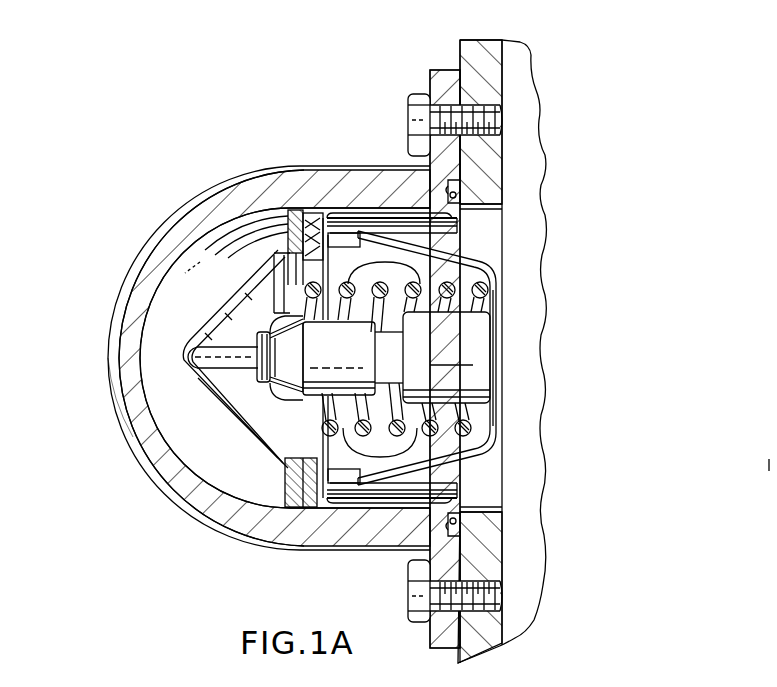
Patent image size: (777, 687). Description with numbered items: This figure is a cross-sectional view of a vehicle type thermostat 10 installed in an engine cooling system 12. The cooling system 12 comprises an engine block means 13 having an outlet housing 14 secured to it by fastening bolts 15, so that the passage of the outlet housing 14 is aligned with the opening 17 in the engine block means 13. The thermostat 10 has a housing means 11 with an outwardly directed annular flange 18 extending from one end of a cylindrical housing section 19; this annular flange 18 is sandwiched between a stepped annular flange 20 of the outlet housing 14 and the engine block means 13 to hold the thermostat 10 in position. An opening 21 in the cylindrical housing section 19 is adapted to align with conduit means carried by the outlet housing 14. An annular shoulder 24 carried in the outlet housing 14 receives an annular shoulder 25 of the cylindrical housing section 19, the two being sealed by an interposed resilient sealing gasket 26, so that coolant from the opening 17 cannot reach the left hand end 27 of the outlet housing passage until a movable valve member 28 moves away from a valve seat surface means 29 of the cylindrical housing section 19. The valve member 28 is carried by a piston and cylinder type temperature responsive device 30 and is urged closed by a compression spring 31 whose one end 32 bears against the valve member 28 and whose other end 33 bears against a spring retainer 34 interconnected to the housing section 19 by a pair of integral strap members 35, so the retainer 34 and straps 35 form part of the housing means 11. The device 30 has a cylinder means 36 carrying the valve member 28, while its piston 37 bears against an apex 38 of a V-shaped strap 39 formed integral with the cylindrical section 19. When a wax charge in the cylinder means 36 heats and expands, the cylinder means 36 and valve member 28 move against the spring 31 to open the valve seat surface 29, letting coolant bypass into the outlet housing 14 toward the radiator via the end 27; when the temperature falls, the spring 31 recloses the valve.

The thermostat 10 is at (470, 233).
The housing means 11 is at (342, 500).
The engine cooling system 12 is at (560, 153).
The engine block means 13 is at (485, 55).
The outlet housing 14 is at (212, 200).
The fastening bolts 15 is at (413, 118).
The opening 17 is at (487, 510).
The annular flange 18 is at (460, 188).
The cylindrical housing section 19 is at (360, 206).
The stepped annular flange 20 is at (445, 75).
The opening 21 is at (398, 440).
The annular shoulder 24 is at (293, 210).
The annular shoulder 25 is at (268, 248).
The resilient sealing gasket 26 is at (308, 222).
The left hand end 27 is at (152, 396).
The movable valve member 28 is at (258, 306).
The valve seat surface means 29 is at (332, 477).
The piston and cylinder type temperature responsive device 30 is at (500, 337).
The compression spring 31 is at (376, 265).
The one end 32 is at (285, 275).
The other end 33 is at (492, 288).
The spring retainer 34 is at (503, 276).
The integral strap members 35 is at (415, 216).
The cylinder means 36 is at (491, 376).
The piston 37 is at (238, 373).
The apex 38 is at (186, 356).
The V-shaped strap 39 is at (202, 323).